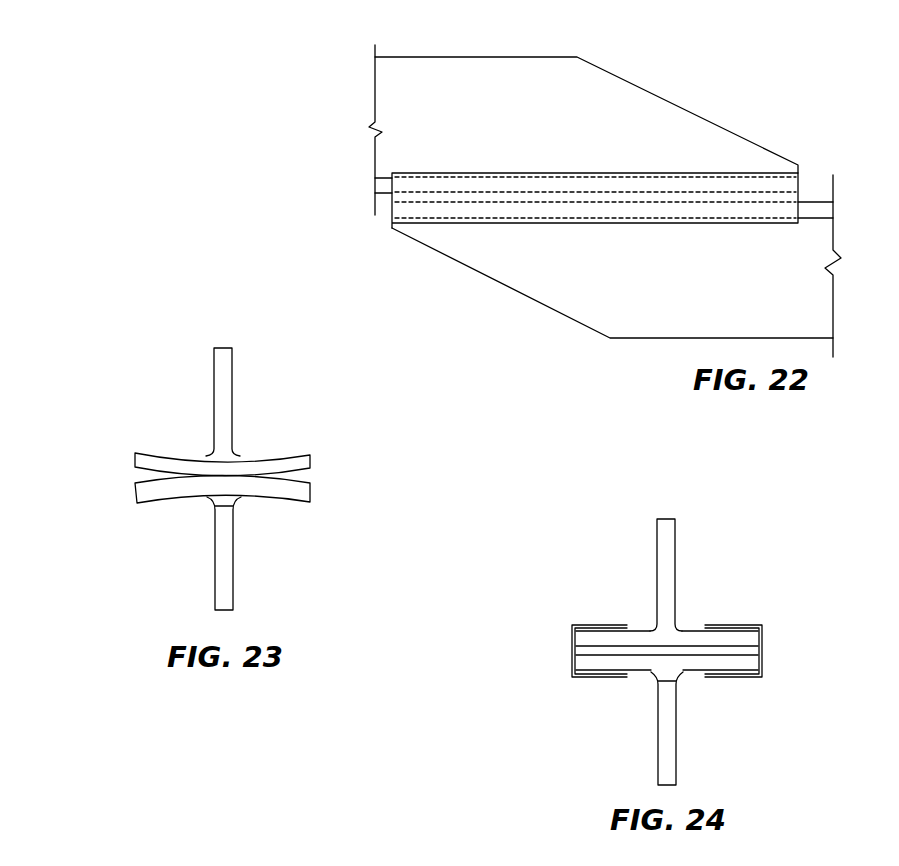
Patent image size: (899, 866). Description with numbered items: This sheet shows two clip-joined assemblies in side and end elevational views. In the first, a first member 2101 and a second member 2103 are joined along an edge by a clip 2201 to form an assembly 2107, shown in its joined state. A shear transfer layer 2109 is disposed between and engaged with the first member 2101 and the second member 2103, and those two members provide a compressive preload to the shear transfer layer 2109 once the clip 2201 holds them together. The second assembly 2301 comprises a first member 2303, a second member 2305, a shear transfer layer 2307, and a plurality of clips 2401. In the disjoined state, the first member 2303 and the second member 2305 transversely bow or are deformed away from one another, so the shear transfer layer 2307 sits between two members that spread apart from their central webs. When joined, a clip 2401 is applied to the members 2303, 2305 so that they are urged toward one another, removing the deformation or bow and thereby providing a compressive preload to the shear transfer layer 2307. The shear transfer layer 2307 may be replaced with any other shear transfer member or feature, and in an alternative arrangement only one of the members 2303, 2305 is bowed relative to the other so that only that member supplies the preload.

In FIG. 22, the first member 2101 is at (583, 78).
In FIG. 22, the second member 2103 is at (497, 268).
In FIG. 22, the assembly 2107 is at (722, 90).
In FIG. 22, the shear transfer layer 2109 is at (433, 197).
In FIG. 22, the clip 2201 is at (410, 212).
In FIG. 23, the assembly 2301 is at (229, 466).
In FIG. 24, the assembly 2301 is at (665, 638).
In FIG. 23, the first member 2303 is at (228, 416).
In FIG. 24, the first member 2303 is at (668, 553).
In FIG. 23, the second member 2305 is at (224, 568).
In FIG. 24, the second member 2305 is at (663, 740).
In FIG. 23, the shear transfer layer 2307 is at (310, 486).
In FIG. 24, the shear transfer layer 2307 is at (677, 650).
In FIG. 24, the clip 2401 is at (568, 662).